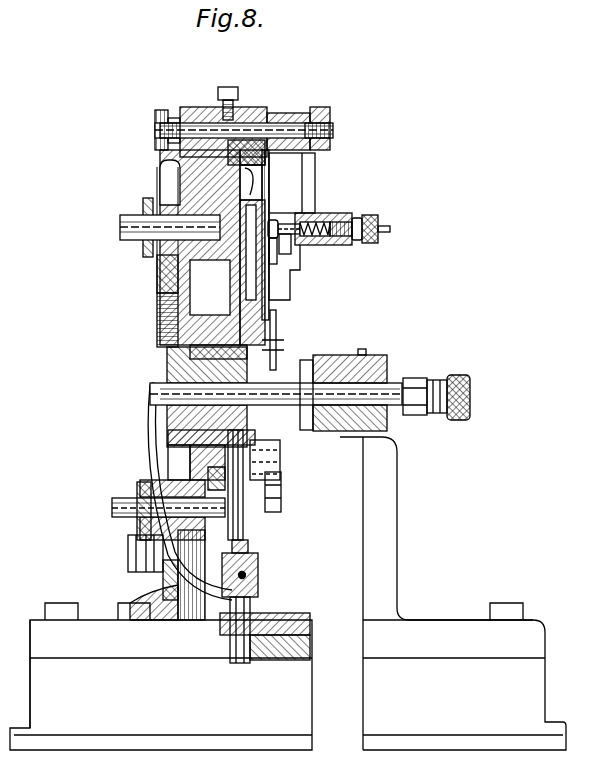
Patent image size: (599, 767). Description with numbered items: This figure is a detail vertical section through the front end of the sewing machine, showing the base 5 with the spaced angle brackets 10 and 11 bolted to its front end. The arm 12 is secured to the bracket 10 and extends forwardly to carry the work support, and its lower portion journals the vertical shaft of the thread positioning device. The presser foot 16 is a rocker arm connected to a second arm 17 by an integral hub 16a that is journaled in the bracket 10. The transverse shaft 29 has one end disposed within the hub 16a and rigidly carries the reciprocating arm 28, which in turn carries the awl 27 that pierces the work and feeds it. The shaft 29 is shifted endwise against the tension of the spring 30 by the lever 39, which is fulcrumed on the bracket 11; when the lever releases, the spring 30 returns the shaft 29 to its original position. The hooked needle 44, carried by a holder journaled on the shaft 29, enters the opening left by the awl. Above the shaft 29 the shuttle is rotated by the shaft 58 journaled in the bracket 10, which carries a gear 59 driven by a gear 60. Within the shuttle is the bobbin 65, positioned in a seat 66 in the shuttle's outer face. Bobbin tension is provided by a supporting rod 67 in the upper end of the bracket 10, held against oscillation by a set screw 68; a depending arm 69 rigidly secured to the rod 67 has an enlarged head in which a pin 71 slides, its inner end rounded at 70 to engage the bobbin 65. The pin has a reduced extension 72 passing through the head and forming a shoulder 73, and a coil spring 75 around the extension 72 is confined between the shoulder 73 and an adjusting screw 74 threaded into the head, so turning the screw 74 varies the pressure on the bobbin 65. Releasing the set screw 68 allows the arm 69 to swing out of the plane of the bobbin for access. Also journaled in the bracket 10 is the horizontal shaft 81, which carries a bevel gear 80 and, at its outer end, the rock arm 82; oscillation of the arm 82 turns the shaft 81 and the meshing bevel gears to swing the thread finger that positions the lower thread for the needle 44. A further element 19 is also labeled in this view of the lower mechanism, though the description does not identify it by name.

The base 5 is at (464, 676).
The angle bracket 10 is at (188, 172).
The angle bracket 11 is at (388, 555).
The arm 12 is at (275, 660).
The presser foot 16 is at (256, 603).
The integral hub 16a is at (205, 355).
The second arm 17 is at (165, 484).
The sleeve 19 is at (250, 548).
The awl 27 is at (283, 480).
The arm 28 is at (328, 355).
The transverse shaft 29 is at (168, 395).
The spring 30 is at (148, 432).
The lever 39 is at (420, 410).
The needle 44 is at (278, 320).
The shaft 58 is at (165, 215).
The gear 59 is at (160, 278).
The gear 60 is at (157, 317).
The bobbin 65 is at (268, 205).
The seat 66 is at (245, 140).
The supporting rod 67 is at (335, 132).
The set screw 68 is at (226, 90).
The depending arm 69 is at (310, 178).
The rounded inner end 70 is at (274, 222).
The pin 71 is at (278, 240).
The reduced extension 72 is at (380, 228).
The shoulder 73 is at (290, 242).
The adjusting screw 74 is at (358, 243).
The coil spring 75 is at (322, 247).
The bevel-gear 80 is at (222, 472).
The horizontal shaft 81 is at (118, 508).
The arm 82 is at (135, 530).